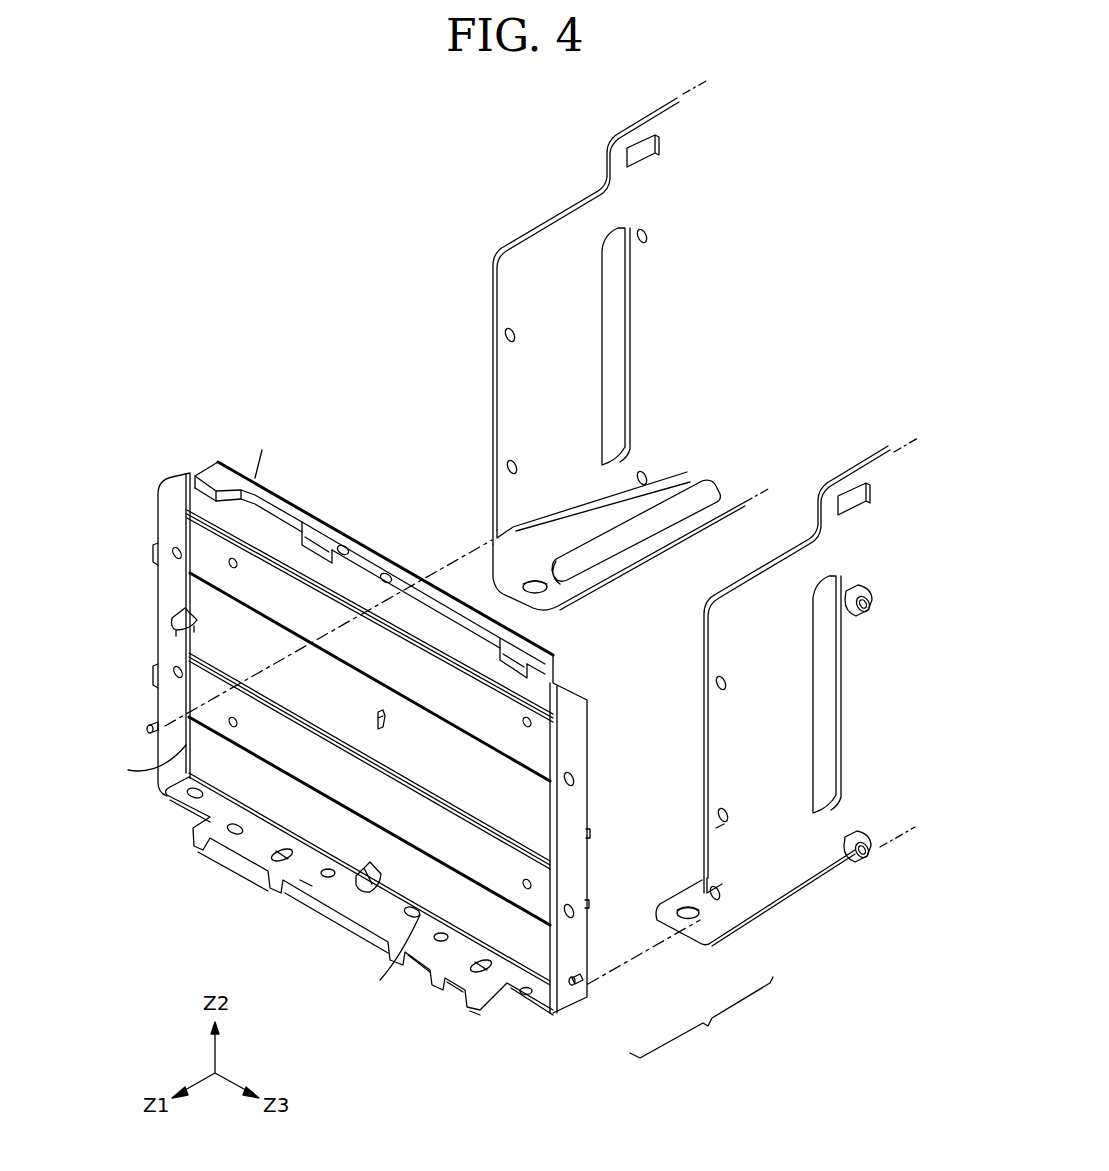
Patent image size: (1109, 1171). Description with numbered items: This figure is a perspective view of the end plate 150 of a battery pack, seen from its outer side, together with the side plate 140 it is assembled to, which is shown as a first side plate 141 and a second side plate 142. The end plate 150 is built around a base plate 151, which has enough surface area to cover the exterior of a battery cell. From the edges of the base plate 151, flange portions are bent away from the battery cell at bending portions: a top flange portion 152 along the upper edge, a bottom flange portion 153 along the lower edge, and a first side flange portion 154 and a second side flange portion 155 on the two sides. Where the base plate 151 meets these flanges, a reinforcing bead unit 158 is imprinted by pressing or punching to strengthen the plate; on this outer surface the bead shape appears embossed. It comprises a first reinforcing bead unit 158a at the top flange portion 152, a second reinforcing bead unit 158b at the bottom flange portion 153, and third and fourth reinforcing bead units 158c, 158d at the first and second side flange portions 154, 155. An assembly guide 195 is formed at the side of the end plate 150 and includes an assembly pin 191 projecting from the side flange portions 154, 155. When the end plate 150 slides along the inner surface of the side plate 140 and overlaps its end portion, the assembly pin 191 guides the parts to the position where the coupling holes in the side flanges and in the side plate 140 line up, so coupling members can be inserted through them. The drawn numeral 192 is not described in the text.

The end plate 150 is at (191, 440).
The base plate 151 is at (280, 803).
The top flange portion 152 is at (320, 535).
The bottom flange portion 153 is at (300, 876).
The first side flange portion 154 is at (168, 605).
The second side flange portion 155 is at (573, 747).
The reinforcing bead unit 158 is at (384, 553).
The first reinforcing bead unit 158a is at (364, 564).
The second reinforcing bead unit 158b is at (360, 879).
The third reinforcing bead unit 158c is at (176, 624).
The fourth reinforcing bead unit 158d is at (591, 832).
The side plate 140 is at (659, 542).
The first side plate 141 is at (543, 222).
The second side plate 142 is at (800, 870).
The assembly pin 191 is at (150, 730).
The fastening hole 192 is at (500, 526).
The assembly guide 195 is at (701, 1017).